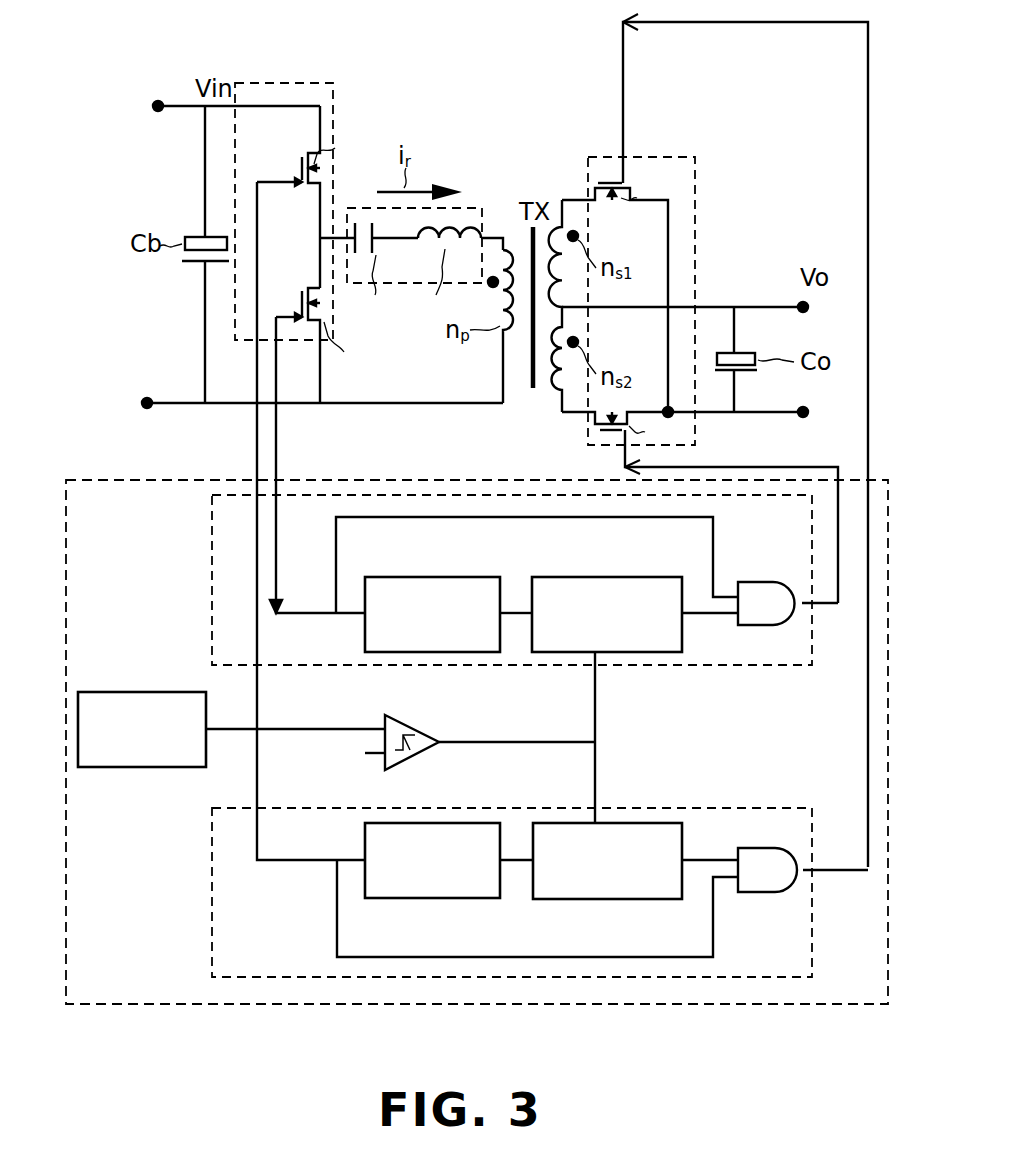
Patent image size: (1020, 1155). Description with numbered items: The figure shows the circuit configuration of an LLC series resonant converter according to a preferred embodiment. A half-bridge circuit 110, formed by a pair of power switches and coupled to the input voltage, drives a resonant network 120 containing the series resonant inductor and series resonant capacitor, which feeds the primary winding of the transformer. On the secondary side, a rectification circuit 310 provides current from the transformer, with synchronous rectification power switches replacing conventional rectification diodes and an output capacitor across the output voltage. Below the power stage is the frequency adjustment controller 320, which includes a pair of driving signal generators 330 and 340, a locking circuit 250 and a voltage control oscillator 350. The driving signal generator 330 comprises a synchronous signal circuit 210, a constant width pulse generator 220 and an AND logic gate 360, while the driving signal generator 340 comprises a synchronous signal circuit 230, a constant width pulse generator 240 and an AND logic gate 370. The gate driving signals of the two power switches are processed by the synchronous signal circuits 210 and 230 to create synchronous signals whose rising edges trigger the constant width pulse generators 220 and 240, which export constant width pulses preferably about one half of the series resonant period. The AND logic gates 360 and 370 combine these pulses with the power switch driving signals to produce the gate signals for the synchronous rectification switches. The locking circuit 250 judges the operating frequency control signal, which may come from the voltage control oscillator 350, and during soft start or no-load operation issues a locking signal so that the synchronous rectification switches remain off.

The half-bridge circuit 110 is at (284, 83).
The resonant network 120 is at (482, 210).
The rectification circuit 310 is at (636, 157).
The frequency adjustment controller 320 is at (66, 745).
The driving signal generator 330 is at (497, 580).
The driving signal generator 340 is at (497, 892).
The voltage control oscillator 350 is at (142, 767).
The AND logic gate 360 is at (750, 582).
The AND logic gate 370 is at (745, 892).
The synchronous signal circuit 210 is at (438, 577).
The constant width pulse generator 220 is at (598, 577).
The synchronous signal circuit 230 is at (450, 898).
The constant width pulse generator 240 is at (611, 899).
The locking circuit 250 is at (414, 724).